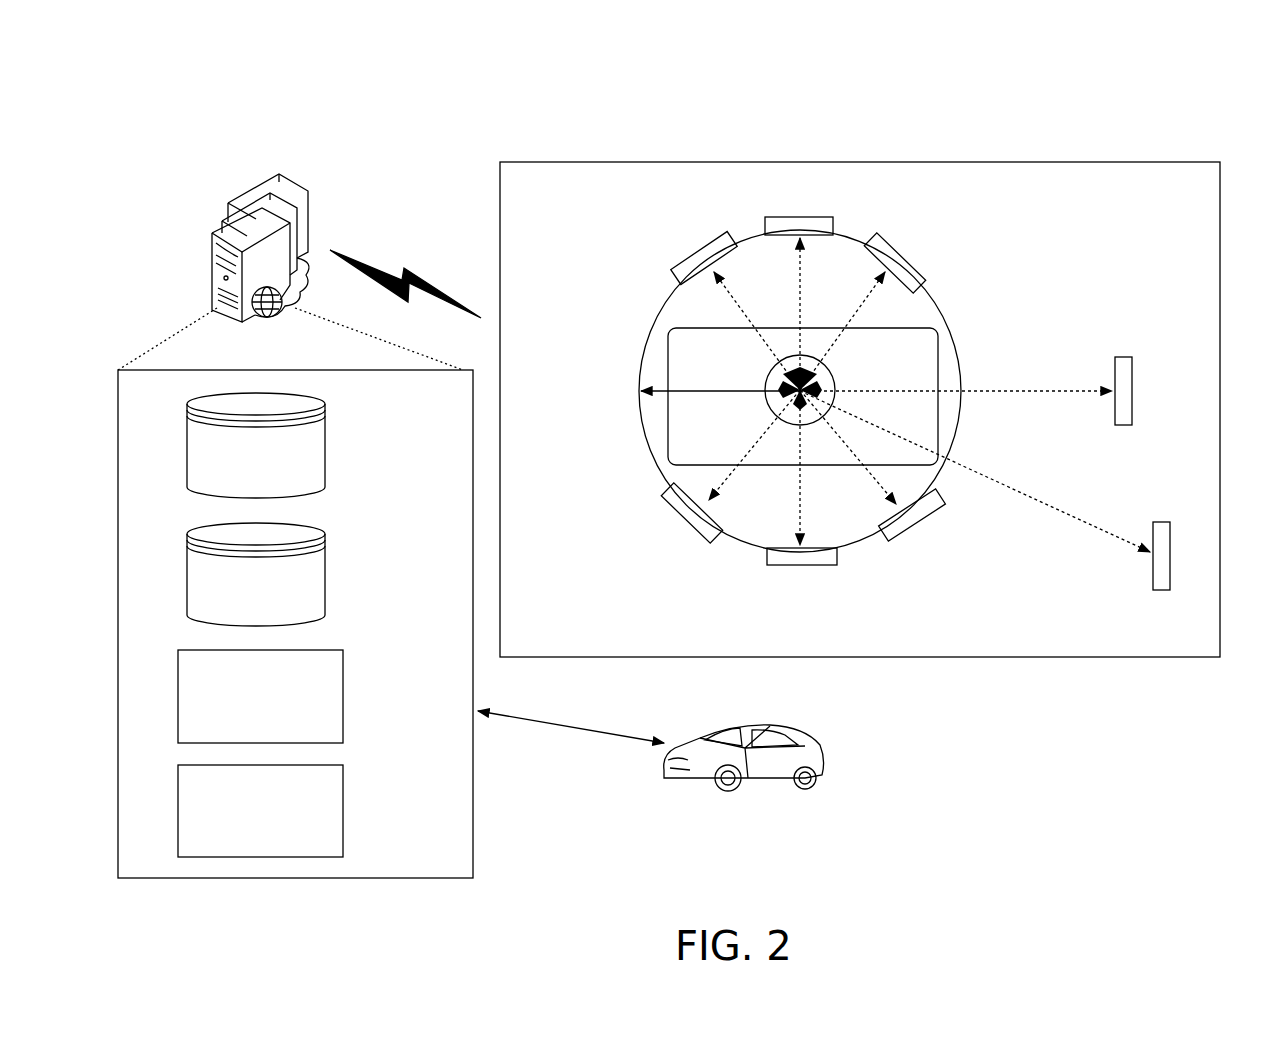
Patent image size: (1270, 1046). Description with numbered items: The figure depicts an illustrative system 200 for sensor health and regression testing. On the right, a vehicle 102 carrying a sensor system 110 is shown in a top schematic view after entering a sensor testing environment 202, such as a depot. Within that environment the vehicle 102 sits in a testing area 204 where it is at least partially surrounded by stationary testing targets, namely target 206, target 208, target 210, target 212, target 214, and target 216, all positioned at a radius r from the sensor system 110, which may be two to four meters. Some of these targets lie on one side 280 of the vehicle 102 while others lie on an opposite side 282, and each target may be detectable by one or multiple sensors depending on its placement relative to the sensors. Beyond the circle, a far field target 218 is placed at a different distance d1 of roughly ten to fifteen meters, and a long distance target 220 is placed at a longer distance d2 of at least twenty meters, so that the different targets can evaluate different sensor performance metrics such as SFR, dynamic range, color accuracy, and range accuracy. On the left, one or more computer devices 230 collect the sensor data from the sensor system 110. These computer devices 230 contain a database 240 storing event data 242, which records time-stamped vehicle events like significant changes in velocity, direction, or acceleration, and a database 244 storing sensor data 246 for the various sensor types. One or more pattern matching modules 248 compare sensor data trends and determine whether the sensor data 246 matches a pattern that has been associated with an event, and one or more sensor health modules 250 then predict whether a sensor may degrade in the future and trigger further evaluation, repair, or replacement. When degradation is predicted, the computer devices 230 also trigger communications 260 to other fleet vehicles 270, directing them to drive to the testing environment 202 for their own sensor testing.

The system 200 is at (228, 62).
The computer devices 230 is at (293, 186).
The database 240 is at (326, 434).
The event data 242 is at (256, 445).
The database 244 is at (326, 563).
The sensor data 246 is at (256, 574).
The pattern matching modules 248 is at (344, 700).
The sensor health modules 250 is at (344, 813).
The sensor testing environment 202 is at (947, 162).
The testing area 204 is at (948, 306).
The vehicle 102 is at (866, 332).
The sensor system 110 is at (833, 380).
The target 206 is at (687, 261).
The target 208 is at (802, 217).
The target 210 is at (910, 260).
The target 212 is at (924, 524).
The target 214 is at (808, 566).
The target 216 is at (681, 526).
The far field target 218 is at (1125, 357).
The long distance target 220 is at (1160, 590).
The communications 260 is at (580, 718).
The vehicles 270 is at (752, 727).
The side 280 is at (928, 197).
The side 282 is at (922, 593).
The radius r is at (690, 391).
The distance d1 is at (1010, 392).
The distance d2 is at (1025, 496).